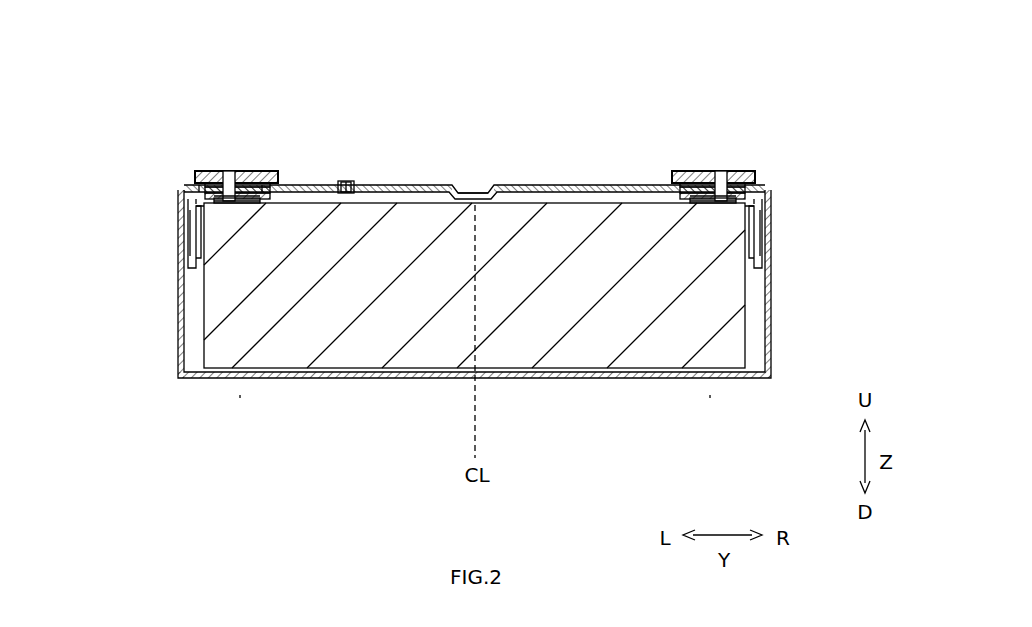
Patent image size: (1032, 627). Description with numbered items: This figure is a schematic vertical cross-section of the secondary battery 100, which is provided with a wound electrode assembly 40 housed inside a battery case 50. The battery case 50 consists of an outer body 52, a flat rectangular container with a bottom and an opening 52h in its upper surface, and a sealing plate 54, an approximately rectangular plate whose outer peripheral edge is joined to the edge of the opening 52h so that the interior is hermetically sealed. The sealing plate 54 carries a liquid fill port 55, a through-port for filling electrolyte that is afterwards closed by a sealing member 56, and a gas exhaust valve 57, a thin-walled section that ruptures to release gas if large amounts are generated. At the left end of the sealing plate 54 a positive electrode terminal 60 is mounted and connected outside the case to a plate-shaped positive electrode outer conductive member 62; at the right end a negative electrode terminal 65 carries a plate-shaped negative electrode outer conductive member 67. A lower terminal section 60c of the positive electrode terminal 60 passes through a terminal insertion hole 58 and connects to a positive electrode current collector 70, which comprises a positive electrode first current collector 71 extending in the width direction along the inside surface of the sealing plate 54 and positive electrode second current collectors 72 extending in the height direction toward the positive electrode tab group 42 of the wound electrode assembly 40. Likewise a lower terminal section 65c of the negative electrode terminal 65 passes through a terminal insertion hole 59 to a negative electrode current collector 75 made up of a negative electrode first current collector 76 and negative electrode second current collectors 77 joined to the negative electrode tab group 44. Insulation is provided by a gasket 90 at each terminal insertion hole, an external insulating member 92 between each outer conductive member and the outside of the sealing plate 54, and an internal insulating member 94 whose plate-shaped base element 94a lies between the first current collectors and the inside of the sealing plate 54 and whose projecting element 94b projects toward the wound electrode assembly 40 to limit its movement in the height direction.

The secondary battery 100 is at (758, 93).
The battery case 50 is at (800, 183).
The outer body 52 is at (774, 350).
The opening 52h is at (199, 187).
The sealing plate 54 is at (532, 185).
The liquid fill port 55 is at (355, 126).
The sealing member 56 is at (346, 184).
The gas exhaust valve 57 is at (477, 185).
The terminal insertion hole 58 is at (238, 184).
The terminal insertion hole 59 is at (718, 185).
The positive electrode terminal 60 is at (233, 176).
The lower terminal section 60c is at (225, 203).
The positive electrode outer conductive member 62 is at (262, 178).
The negative electrode terminal 65 is at (724, 176).
The lower terminal section 65c is at (725, 203).
The negative electrode outer conductive member 67 is at (690, 183).
The positive electrode current collector 70 is at (116, 203).
The positive electrode first current collector 71 is at (190, 210).
The positive electrode second current collector 72 is at (190, 240).
The negative electrode current collector 75 is at (838, 203).
The negative electrode first current collector 76 is at (760, 210).
The negative electrode second current collector 77 is at (760, 240).
The gasket 90 is at (220, 186).
The external insulating member 92 is at (212, 188).
The internal insulating member 94 is at (366, 400).
The base element 94a is at (255, 203).
The projecting element 94b is at (242, 203).
The wound electrode assembly 40 is at (457, 356).
The positive electrode tab group 42 is at (188, 278).
The negative electrode tab group 44 is at (762, 278).